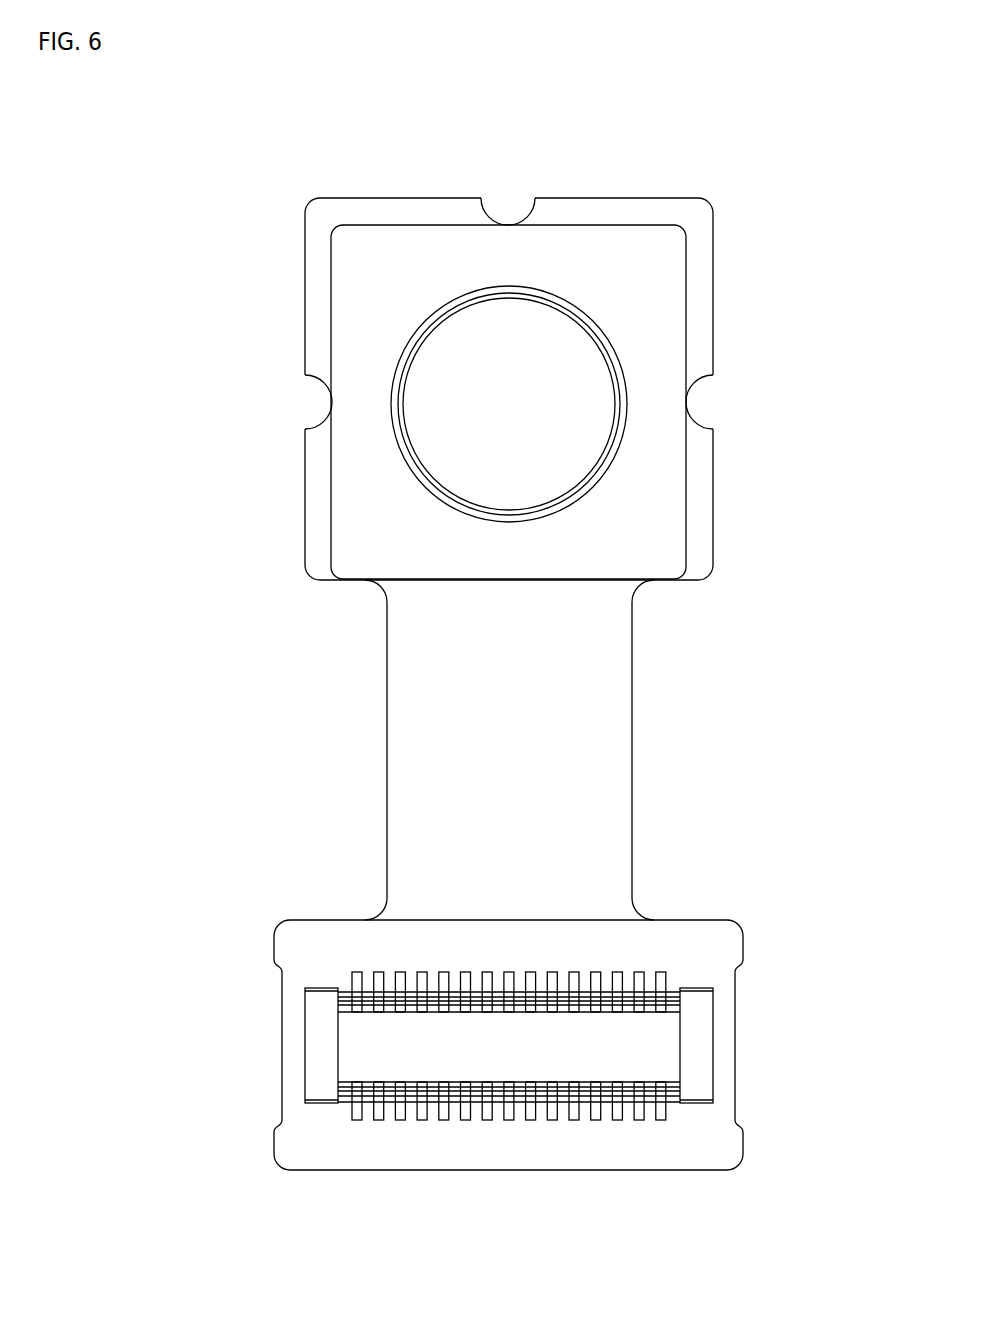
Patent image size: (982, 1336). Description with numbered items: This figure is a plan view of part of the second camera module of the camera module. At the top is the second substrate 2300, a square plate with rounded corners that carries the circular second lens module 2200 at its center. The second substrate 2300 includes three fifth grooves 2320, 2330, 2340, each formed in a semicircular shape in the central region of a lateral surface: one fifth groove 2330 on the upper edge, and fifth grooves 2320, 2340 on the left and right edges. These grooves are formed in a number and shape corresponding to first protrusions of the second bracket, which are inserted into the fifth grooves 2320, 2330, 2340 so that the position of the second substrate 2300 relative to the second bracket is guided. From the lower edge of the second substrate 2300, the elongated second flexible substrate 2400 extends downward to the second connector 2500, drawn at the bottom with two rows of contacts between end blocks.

The second lens module 2200 is at (650, 305).
The second substrate 2300 is at (605, 208).
The fifth groove 2320 is at (315, 405).
The fifth groove 2330 is at (516, 196).
The fifth groove 2340 is at (704, 400).
The second flexible substrate 2400 is at (610, 772).
The second connector 2500 is at (732, 948).